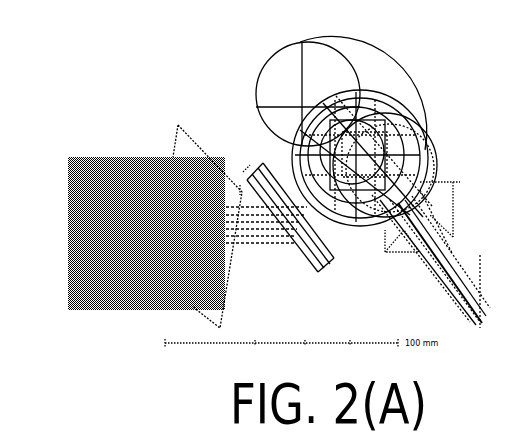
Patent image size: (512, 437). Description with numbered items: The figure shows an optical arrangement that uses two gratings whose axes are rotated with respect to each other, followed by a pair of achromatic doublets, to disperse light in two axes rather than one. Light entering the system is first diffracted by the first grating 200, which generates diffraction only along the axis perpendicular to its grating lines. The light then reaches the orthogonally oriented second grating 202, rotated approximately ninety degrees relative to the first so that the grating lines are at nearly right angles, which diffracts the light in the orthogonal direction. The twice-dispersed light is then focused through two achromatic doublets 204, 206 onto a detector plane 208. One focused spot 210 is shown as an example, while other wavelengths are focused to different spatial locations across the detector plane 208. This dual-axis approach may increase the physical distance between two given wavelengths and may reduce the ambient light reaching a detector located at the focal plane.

The first grating 200 is at (295, 232).
The second grating 202 is at (308, 80).
The achromatic doublet 204 is at (387, 93).
The achromatic doublet 206 is at (430, 147).
The detector plane 208 is at (460, 207).
The spot 210 is at (395, 258).